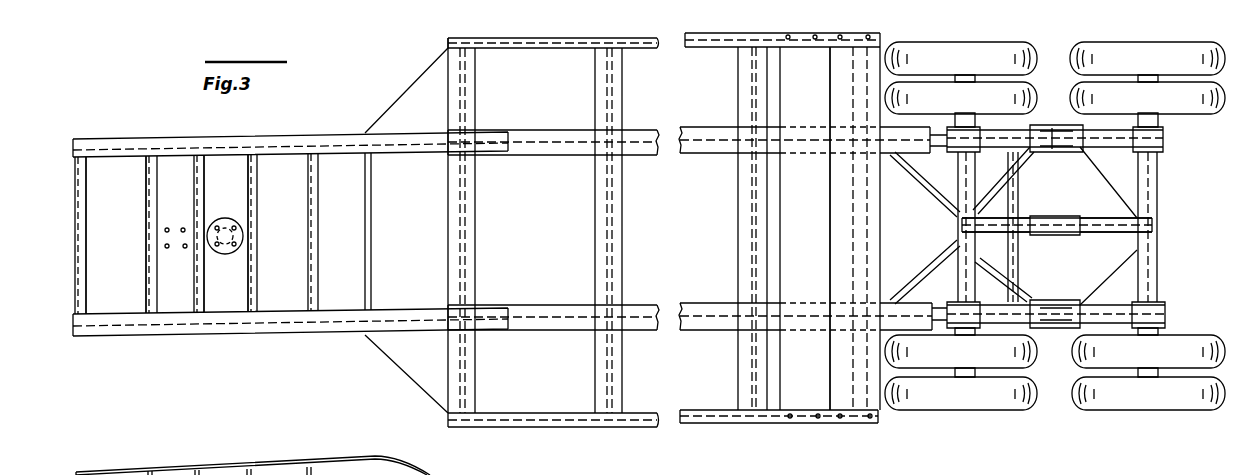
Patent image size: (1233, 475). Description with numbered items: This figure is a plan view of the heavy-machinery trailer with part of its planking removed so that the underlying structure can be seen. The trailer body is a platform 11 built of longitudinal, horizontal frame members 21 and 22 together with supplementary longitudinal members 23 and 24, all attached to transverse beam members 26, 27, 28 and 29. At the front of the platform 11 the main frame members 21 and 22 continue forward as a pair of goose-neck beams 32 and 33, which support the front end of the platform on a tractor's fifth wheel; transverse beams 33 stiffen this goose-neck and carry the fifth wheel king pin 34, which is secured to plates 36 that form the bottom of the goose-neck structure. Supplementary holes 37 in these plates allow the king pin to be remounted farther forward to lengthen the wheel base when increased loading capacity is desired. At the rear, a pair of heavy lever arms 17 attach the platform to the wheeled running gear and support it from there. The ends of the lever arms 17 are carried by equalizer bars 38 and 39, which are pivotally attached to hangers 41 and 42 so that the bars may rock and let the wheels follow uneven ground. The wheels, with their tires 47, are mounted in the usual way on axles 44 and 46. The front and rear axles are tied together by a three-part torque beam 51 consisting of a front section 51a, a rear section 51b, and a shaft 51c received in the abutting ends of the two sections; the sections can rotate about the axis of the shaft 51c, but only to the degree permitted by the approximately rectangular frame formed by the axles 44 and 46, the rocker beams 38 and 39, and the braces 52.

The platform 11 is at (671, 256).
The lever arms 17 is at (942, 148).
The longitudinal frame member 21 is at (525, 328).
The longitudinal frame member 22 is at (530, 153).
The supplementary longitudinal member 23 is at (725, 418).
The supplementary longitudinal member 24 is at (535, 49).
The transverse beam member 26 is at (453, 370).
The transverse beam member 27 is at (600, 371).
The transverse beam member 28 is at (743, 358).
The transverse beam member 29 is at (860, 378).
The goose-neck beam 32 is at (305, 328).
The goose-neck beam / transverse beams 33 is at (327, 140).
The fifth wheel king pin 34 is at (229, 222).
The plates 36 is at (132, 283).
The supplementary holes 37 is at (165, 231).
The equalizer bar 38 is at (1107, 311).
The equalizer bar 39 is at (1107, 144).
The hanger 41 is at (1063, 328).
The hanger 42 is at (1077, 149).
The axle 44 is at (962, 258).
The axle 46 is at (1147, 259).
The tires 47 is at (962, 400).
The torque beam 51 is at (1073, 253).
The front section 51a is at (1020, 220).
The rear section 51b is at (1110, 222).
The shaft 51c is at (1033, 238).
The braces 52 is at (1088, 293).